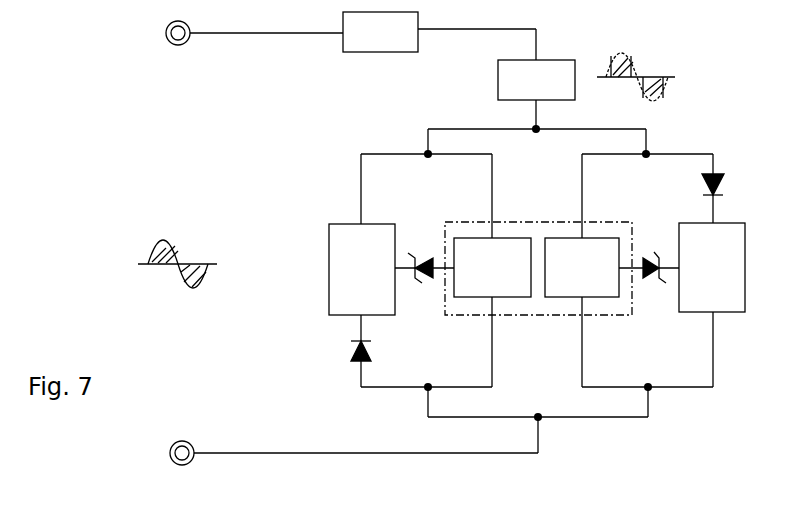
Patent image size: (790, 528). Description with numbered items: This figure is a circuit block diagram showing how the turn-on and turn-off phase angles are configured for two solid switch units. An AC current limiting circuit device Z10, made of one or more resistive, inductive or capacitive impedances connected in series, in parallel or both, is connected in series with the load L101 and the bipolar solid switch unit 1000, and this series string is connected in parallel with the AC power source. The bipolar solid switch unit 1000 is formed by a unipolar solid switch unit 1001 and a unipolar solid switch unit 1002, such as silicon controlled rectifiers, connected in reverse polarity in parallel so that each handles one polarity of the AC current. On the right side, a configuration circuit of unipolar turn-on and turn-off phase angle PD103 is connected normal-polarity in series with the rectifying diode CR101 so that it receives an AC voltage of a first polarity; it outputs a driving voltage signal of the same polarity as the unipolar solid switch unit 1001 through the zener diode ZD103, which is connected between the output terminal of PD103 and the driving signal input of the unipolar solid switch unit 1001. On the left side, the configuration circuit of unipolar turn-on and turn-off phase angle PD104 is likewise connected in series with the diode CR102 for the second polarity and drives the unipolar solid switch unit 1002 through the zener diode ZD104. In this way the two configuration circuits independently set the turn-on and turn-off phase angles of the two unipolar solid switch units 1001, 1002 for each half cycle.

The AC current limiting circuit device Z10 is at (380, 32).
The load L101 is at (536, 80).
The bipolar solid switch unit 1000 is at (533, 220).
The unipolar solid switch unit 1001 is at (582, 267).
The unipolar solid switch unit 1002 is at (492, 267).
The configuration circuit of unipolar turn-on and turn-off phase angle PD104 is at (362, 269).
The configuration circuit of unipolar turn-on and turn-off phase angle PD103 is at (712, 267).
The zener diode ZD104 is at (421, 252).
The zener diode ZD103 is at (650, 280).
The diode CR101 is at (702, 178).
The diode CR102 is at (374, 358).